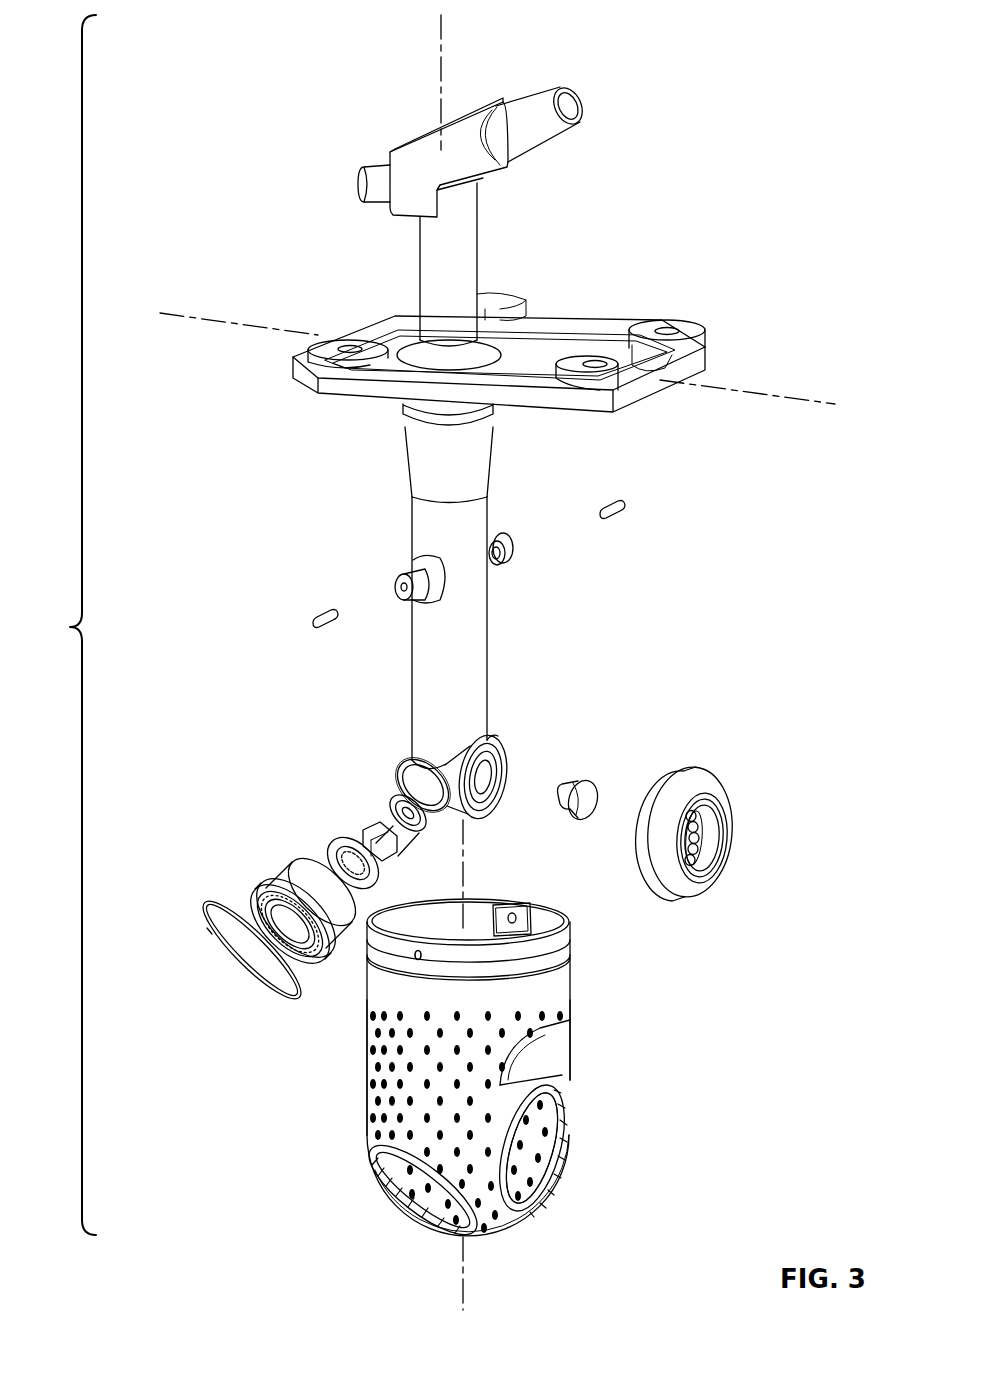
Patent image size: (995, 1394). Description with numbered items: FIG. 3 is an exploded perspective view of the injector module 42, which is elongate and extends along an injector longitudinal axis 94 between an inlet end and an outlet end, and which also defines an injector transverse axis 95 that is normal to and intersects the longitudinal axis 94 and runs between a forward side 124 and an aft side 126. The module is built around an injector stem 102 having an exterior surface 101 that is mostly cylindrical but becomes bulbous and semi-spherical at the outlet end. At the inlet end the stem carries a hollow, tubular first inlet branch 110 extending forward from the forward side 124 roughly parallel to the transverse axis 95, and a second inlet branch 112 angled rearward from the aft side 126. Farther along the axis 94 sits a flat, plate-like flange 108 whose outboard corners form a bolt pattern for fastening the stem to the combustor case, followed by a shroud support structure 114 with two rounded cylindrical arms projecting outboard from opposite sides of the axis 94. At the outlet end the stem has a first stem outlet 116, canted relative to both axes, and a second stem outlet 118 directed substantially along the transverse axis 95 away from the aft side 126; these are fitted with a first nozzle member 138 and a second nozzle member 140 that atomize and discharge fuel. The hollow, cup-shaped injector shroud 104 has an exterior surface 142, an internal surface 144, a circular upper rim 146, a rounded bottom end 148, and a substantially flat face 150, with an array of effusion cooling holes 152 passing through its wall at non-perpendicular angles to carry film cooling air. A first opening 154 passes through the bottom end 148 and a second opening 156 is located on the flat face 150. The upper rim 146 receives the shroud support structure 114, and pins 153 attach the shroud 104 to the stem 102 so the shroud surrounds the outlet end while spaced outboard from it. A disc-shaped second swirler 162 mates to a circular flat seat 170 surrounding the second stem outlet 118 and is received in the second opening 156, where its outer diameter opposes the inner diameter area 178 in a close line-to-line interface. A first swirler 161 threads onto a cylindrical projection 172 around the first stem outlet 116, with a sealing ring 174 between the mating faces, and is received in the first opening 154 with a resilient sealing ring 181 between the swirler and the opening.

The injector module 42 is at (64, 625).
The injector longitudinal axis 94 is at (436, 40).
The injector transverse axis 95 is at (785, 392).
The exterior surface 101 is at (475, 622).
The injector stem 102 is at (384, 507).
The injector shroud 104 is at (224, 1128).
The flange 108 is at (553, 352).
The first inlet branch 110 is at (372, 168).
The second inlet branch 112 is at (530, 98).
The shroud support structure 114 is at (500, 532).
The first stem outlet 116 is at (392, 782).
The second stem outlet 118 is at (512, 760).
The forward side 124 is at (355, 335).
The aft side 126 is at (650, 392).
The first nozzle member 138 is at (385, 815).
The second nozzle member 140 is at (582, 790).
The exterior surface 142 is at (560, 1022).
The internal surface 144 is at (473, 910).
The upper rim 146 is at (575, 945).
The bottom end 148 is at (505, 1226).
The flat face 150 is at (555, 1078).
The effusion cooling holes 152 is at (386, 1025).
The pins 153 is at (620, 495).
The first opening 154 is at (396, 1200).
The second opening 156 is at (556, 1184).
The first swirler 161 is at (255, 875).
The second swirler 162 is at (705, 780).
The seat 170 is at (490, 737).
The cylindrical projection 172 is at (418, 760).
The sealing ring 174 is at (345, 840).
The inner diameter area 178 is at (565, 1135).
The resilient sealing ring 181 is at (205, 915).